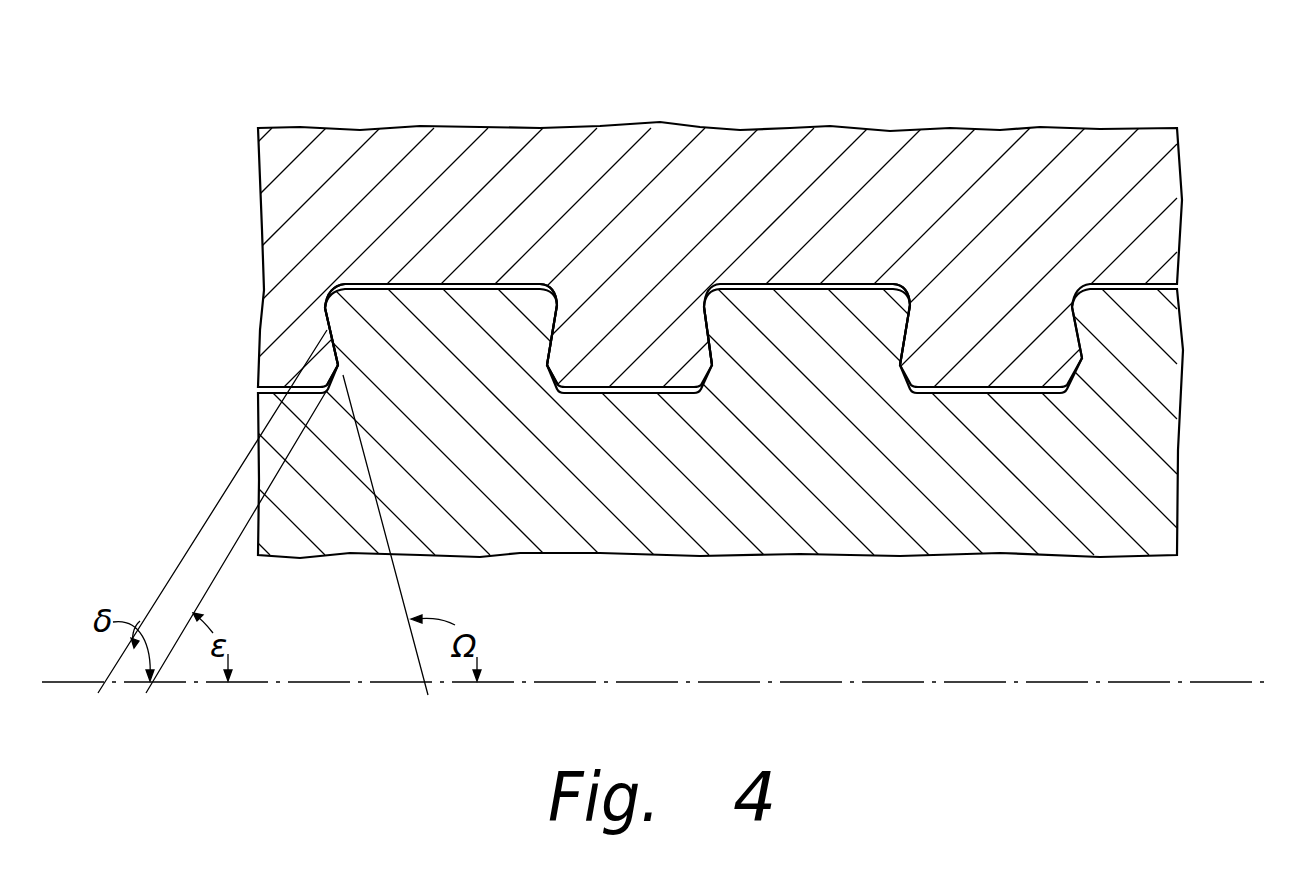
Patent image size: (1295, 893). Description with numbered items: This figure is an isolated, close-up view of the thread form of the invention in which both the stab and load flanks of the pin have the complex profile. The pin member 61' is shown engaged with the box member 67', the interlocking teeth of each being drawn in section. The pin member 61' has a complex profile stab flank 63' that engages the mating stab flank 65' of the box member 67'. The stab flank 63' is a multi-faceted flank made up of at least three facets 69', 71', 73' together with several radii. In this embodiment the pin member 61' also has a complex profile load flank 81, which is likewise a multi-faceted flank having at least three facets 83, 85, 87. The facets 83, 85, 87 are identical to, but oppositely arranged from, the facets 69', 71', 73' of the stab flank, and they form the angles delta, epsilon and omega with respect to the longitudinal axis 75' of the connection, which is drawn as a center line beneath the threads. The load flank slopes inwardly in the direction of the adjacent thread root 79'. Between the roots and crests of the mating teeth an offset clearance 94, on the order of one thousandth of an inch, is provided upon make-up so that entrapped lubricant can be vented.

The pin member 61' is at (759, 423).
The stab flank 63' is at (975, 226).
The mating stab flank 65' is at (957, 178).
The box member 67' is at (757, 254).
The facet 69' is at (590, 160).
The facet 71' is at (606, 207).
The facet 73' is at (619, 233).
The longitudinal axis 75' is at (664, 661).
The thread root 79' is at (624, 489).
The load flank 81 is at (708, 333).
The facet 83 is at (338, 295).
The facet 85 is at (332, 337).
The facet 87 is at (333, 376).
The offset clearance 94 is at (800, 290).